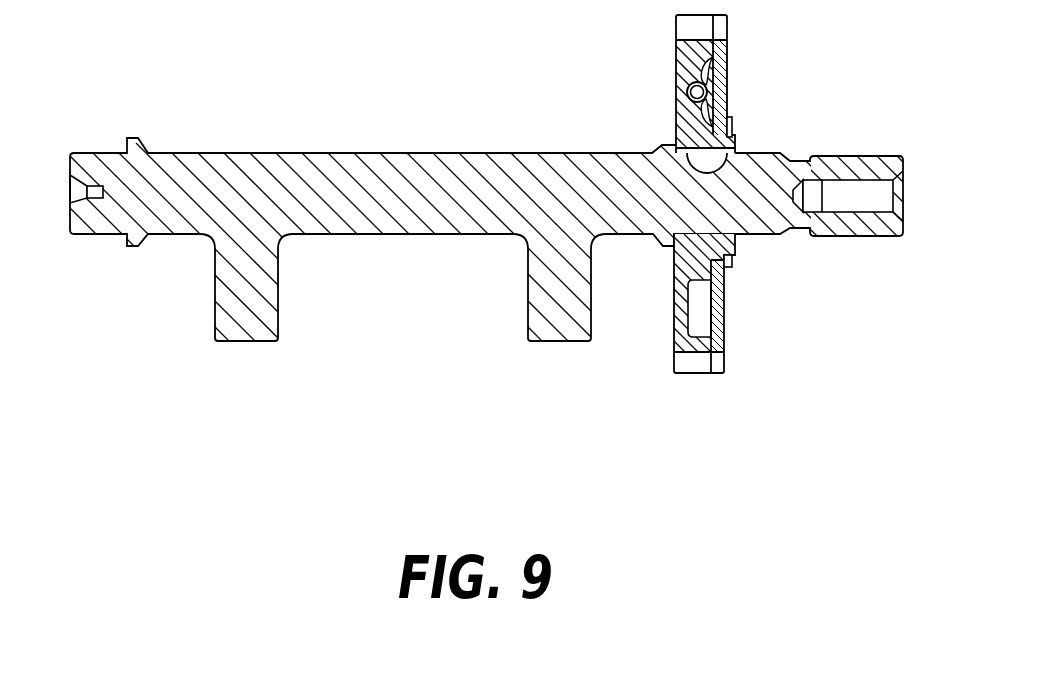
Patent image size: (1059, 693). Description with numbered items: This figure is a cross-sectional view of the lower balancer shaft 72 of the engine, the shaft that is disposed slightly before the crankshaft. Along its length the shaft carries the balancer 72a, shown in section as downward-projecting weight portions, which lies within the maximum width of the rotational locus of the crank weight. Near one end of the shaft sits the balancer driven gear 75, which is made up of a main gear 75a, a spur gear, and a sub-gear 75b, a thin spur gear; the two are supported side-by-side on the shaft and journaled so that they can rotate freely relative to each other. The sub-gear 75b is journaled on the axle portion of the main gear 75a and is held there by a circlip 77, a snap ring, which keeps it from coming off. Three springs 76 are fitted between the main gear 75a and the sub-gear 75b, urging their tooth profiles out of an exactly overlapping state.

The lower balancer shaft 72 is at (400, 153).
The balancer 72a is at (565, 377).
The balancer driven gear 75 is at (698, 368).
The main gear 75a is at (685, 373).
The sub-gear 75b is at (718, 373).
The spring 76 is at (706, 88).
The circlip 77 is at (732, 125).